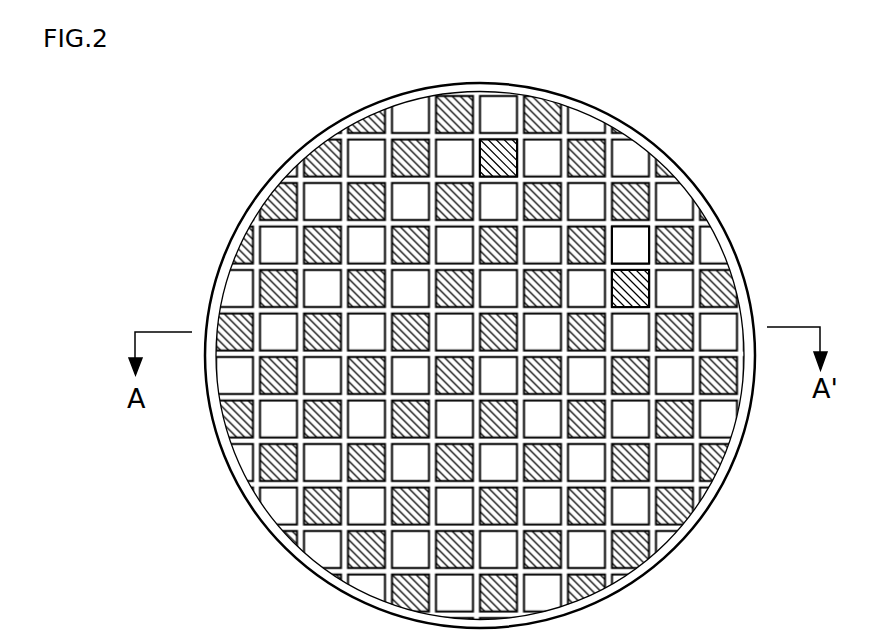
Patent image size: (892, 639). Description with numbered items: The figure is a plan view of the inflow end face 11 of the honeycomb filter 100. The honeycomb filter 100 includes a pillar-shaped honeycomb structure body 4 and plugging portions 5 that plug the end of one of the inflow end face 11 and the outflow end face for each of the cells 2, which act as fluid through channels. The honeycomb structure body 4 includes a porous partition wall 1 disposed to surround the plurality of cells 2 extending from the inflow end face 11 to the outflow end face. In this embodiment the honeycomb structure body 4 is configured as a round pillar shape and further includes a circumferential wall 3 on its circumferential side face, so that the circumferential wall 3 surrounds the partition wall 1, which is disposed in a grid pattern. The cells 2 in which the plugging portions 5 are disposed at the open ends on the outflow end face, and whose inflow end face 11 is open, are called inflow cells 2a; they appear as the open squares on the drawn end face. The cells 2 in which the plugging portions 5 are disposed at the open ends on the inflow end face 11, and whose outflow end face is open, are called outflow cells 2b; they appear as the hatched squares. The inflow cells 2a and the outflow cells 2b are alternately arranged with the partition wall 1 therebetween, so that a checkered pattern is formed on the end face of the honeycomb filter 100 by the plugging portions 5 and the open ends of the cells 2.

The honeycomb filter 100 is at (812, 47).
The inflow end face 11 is at (279, 135).
The partition wall 1 is at (585, 177).
The cell 2 is at (713, 226).
The inflow cell 2a is at (625, 240).
The outflow cell 2b is at (625, 287).
The circumferential wall 3 is at (698, 520).
The honeycomb structure body 4 is at (763, 297).
The plugging portion 5 is at (500, 155).